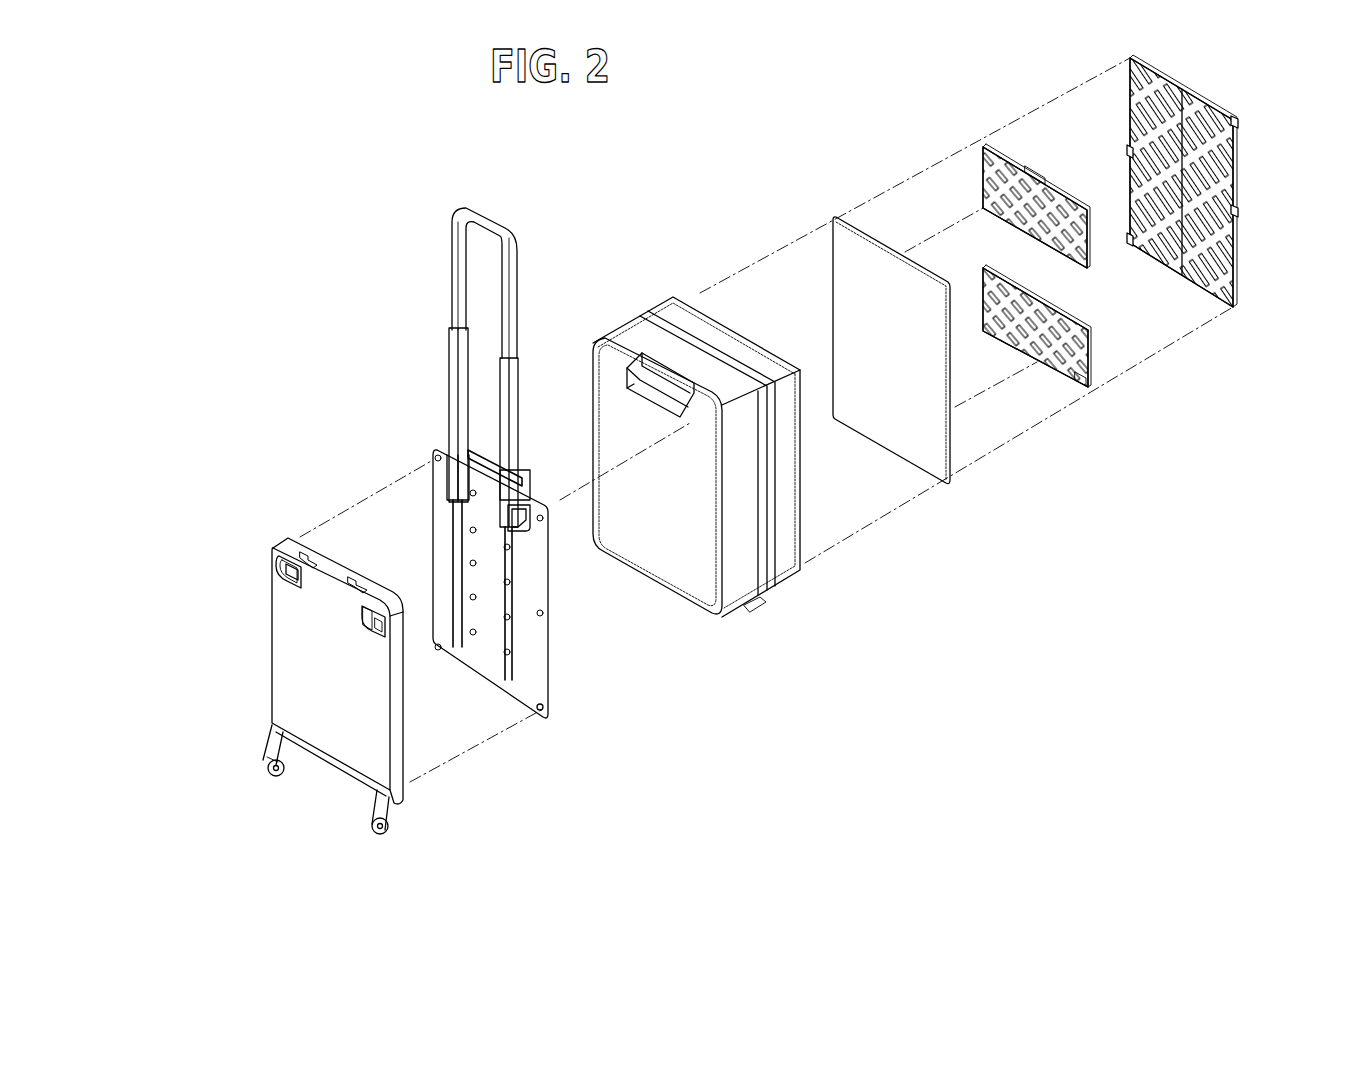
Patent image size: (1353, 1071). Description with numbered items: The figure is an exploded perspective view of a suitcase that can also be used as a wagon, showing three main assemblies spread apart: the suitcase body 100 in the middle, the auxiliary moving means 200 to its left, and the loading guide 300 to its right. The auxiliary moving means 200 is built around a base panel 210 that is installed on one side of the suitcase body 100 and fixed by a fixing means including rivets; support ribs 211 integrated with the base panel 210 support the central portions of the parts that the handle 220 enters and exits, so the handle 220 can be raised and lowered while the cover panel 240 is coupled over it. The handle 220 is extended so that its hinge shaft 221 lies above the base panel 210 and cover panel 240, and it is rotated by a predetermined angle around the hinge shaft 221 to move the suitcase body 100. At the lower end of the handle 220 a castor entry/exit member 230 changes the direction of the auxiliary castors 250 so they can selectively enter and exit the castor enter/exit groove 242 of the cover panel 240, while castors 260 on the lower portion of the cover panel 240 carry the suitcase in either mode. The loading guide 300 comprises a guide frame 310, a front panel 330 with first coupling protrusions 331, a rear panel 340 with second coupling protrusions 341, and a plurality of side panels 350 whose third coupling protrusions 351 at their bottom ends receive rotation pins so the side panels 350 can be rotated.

The suitcase body 100 is at (663, 302).
The auxiliary moving means 200 is at (363, 493).
The base panel 210 is at (540, 657).
The support ribs 211 is at (537, 708).
The handle 220 is at (452, 268).
The hinge shaft 221 is at (480, 458).
The castor entry/exit member 230 is at (520, 500).
The cover panel 240 is at (293, 673).
The castor enter/exit groove 242 is at (282, 570).
The auxiliary castors 250 is at (273, 578).
The castors 260 is at (395, 810).
The loading guide 300 is at (963, 148).
The guide frame 310 is at (953, 452).
The front panel 330 is at (1017, 158).
The first coupling protrusions 331 is at (1035, 177).
The rear panel 340 is at (1060, 375).
The second coupling protrusions 341 is at (1080, 388).
The side panels 350 is at (1237, 173).
The third coupling protrusions 351 is at (1233, 210).